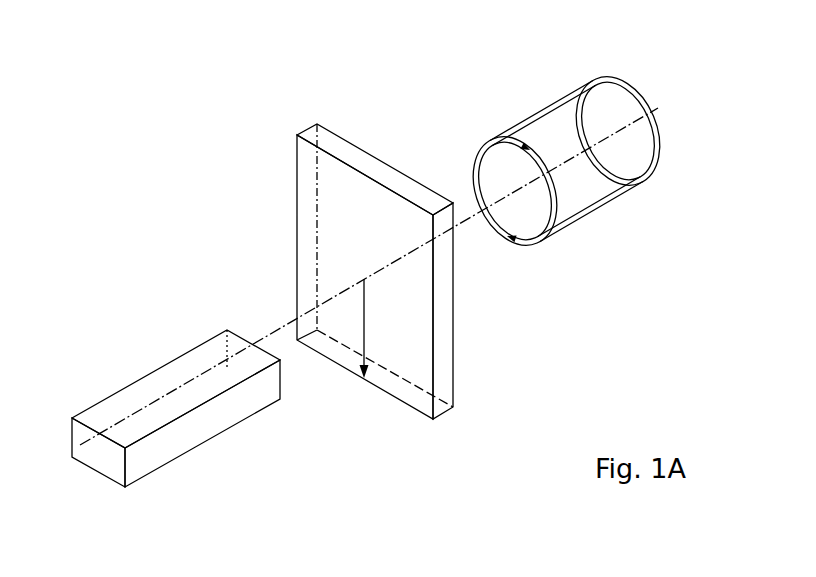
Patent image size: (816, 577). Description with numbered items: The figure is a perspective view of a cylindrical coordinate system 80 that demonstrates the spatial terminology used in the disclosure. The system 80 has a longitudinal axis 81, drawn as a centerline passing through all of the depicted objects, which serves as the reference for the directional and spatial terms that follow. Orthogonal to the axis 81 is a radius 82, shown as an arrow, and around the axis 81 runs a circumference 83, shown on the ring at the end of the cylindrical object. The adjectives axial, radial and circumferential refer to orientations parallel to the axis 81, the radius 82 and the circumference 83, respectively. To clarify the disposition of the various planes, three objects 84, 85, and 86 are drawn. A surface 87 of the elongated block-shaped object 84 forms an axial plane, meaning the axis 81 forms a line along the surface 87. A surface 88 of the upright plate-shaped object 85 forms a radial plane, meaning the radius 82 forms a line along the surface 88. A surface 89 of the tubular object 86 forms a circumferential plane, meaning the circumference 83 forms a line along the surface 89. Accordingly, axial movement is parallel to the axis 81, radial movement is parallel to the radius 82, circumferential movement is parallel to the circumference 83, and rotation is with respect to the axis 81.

The cylindrical coordinate system 80 is at (253, 167).
The longitudinal axis 81 is at (651, 111).
The radius 82 is at (364, 323).
The circumference 83 is at (476, 163).
The object 84 is at (145, 477).
The object 85 is at (466, 416).
The object 86 is at (597, 228).
The surface 87 is at (143, 392).
The surface 88 is at (308, 236).
The surface 89 is at (541, 109).